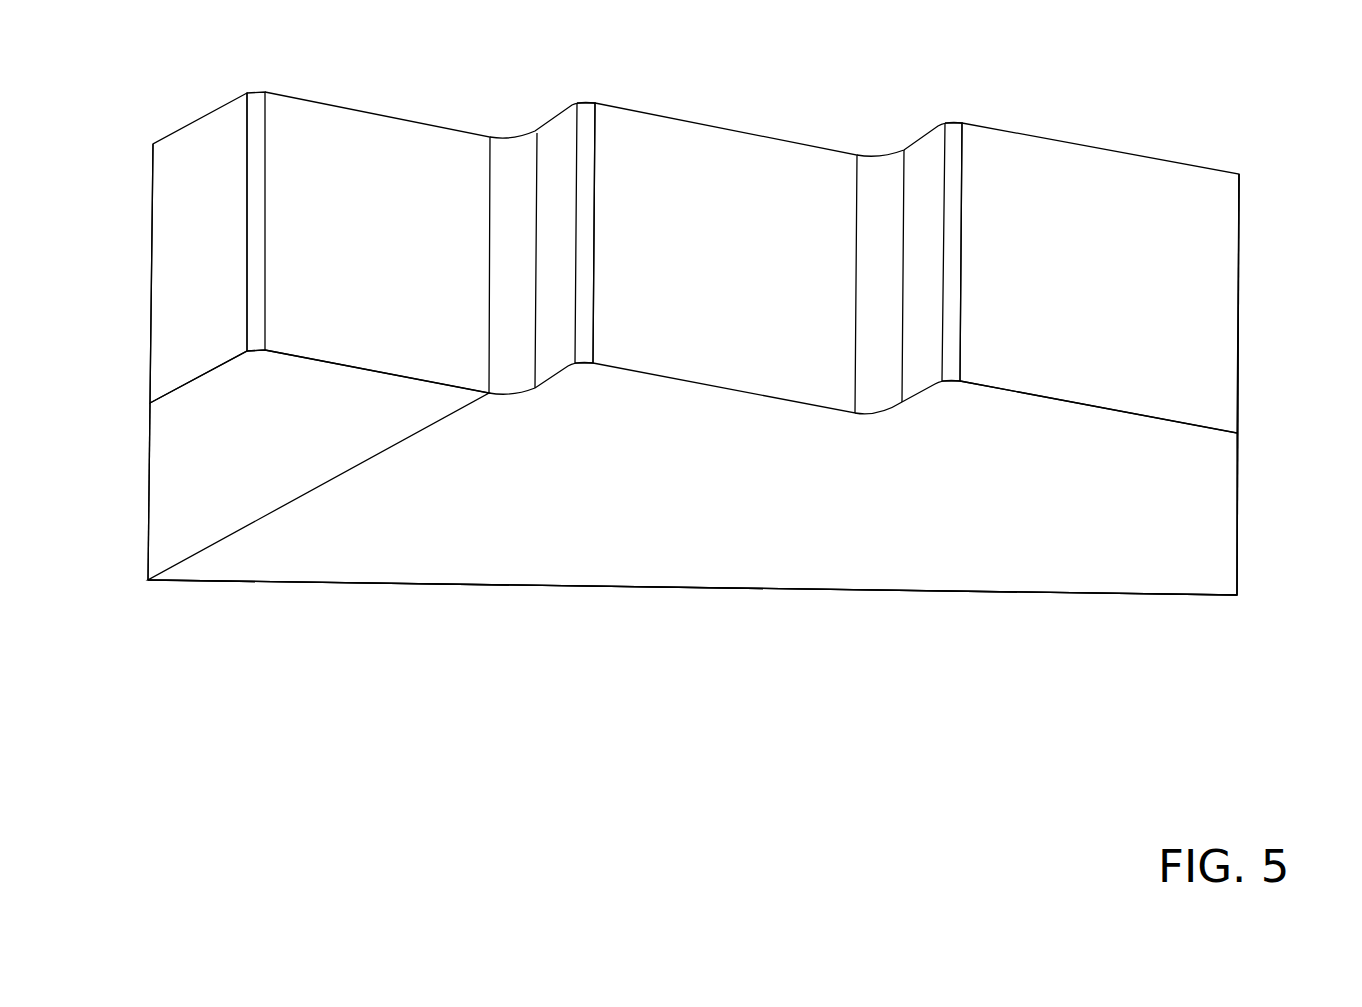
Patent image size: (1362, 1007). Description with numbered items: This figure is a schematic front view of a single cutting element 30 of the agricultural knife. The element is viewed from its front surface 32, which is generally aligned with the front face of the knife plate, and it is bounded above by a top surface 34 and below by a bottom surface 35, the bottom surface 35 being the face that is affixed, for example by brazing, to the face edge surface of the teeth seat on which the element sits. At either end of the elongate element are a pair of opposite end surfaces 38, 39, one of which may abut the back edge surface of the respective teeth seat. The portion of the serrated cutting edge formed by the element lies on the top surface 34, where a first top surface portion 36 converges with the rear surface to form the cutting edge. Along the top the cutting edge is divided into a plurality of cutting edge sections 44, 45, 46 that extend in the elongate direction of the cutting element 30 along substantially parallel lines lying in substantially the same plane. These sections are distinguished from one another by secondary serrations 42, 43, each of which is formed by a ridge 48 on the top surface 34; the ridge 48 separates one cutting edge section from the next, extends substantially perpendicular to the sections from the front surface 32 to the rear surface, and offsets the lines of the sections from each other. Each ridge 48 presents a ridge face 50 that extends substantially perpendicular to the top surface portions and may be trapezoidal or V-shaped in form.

The cutting element 30 is at (1222, 88).
The front surface 32 is at (290, 540).
The top surface 34 is at (295, 125).
The bottom surface 35 is at (852, 593).
The first top surface portion 36 is at (640, 142).
The end surface 38 is at (1242, 518).
The end surface 39 is at (147, 505).
The secondary serration 42 is at (948, 108).
The secondary serration 43 is at (585, 78).
The cutting edge section 44 is at (1080, 143).
The cutting edge section 45 is at (705, 123).
The cutting edge section 46 is at (360, 107).
The ridge 48 is at (915, 103).
The ridge face 50 is at (187, 292).